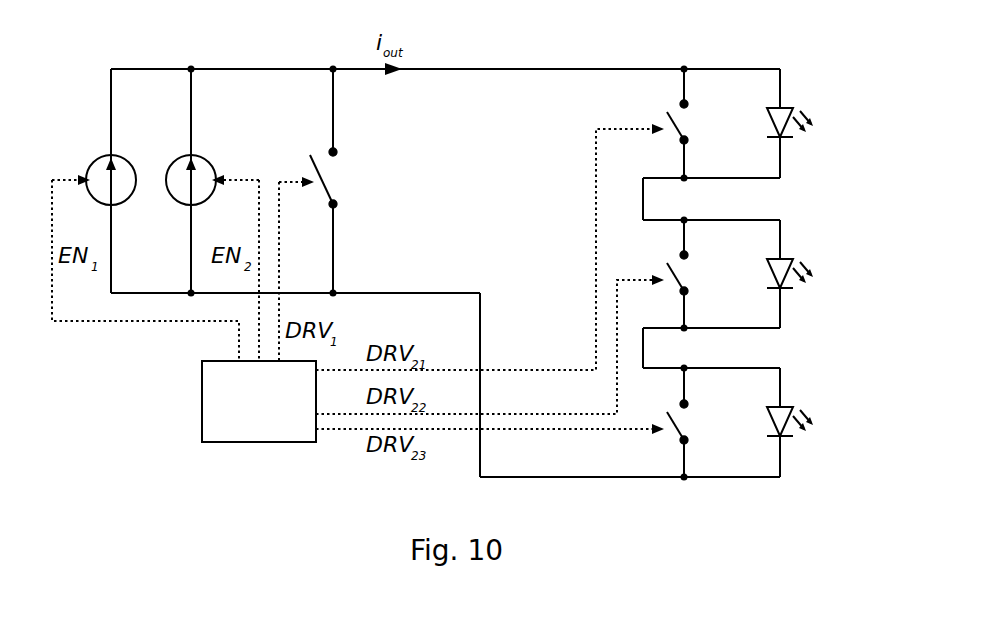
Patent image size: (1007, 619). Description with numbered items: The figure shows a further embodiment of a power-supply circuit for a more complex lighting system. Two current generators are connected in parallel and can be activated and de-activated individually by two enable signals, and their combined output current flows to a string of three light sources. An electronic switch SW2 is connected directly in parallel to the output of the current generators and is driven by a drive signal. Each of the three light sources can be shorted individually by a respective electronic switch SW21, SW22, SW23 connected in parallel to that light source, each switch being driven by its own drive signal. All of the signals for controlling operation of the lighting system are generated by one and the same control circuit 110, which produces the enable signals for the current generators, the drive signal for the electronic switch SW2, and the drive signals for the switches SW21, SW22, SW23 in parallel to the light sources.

The electronic switch SW2 is at (314, 146).
The control circuit 110 is at (223, 437).
The switch SW21 is at (692, 127).
The switch SW22 is at (692, 278).
The switch SW23 is at (692, 427).